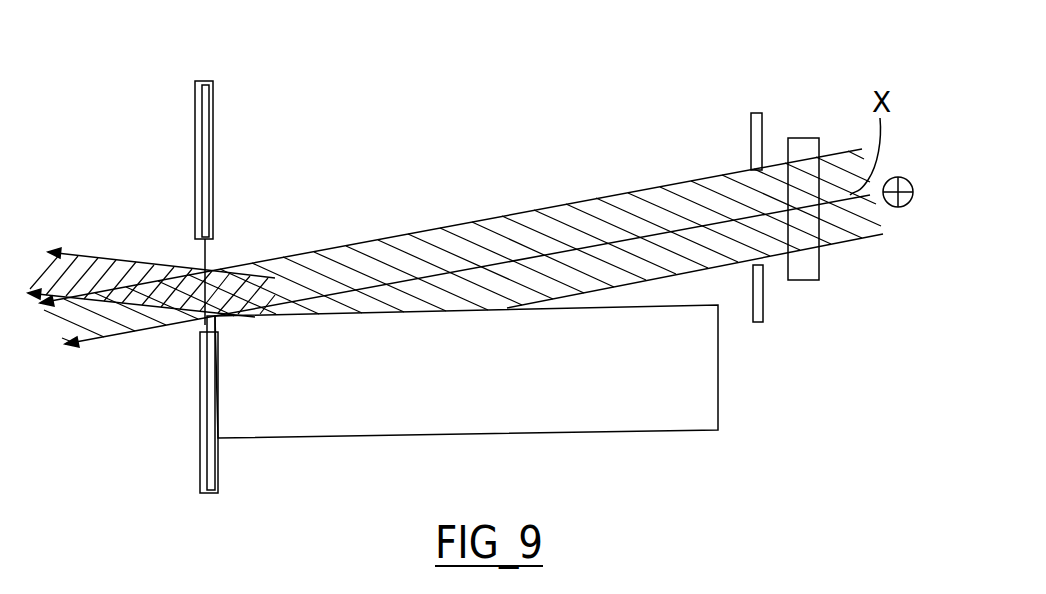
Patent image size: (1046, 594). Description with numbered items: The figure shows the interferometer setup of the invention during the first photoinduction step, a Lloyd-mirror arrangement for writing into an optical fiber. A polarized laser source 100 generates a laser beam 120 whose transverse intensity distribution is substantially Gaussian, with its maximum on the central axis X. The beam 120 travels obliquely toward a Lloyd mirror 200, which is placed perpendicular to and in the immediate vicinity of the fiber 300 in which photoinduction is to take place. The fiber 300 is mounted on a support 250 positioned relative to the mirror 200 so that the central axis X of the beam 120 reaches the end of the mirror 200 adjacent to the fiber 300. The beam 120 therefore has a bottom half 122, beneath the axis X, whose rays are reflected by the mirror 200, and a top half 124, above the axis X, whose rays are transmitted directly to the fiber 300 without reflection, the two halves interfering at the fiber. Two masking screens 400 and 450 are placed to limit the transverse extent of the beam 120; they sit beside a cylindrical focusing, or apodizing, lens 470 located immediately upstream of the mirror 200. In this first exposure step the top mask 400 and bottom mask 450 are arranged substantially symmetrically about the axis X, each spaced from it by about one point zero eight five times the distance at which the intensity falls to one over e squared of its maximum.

The polarized laser source 100 is at (903, 210).
The laser beam 120 is at (633, 207).
The bottom half of the beam 122 is at (640, 273).
The top half of the beam 124 is at (520, 230).
The Lloyd mirror 200 is at (497, 412).
The support 250 is at (196, 104).
The fiber 300 is at (202, 253).
The top masking screen 400 is at (751, 125).
The bottom masking screen 450 is at (752, 312).
The cylindrical focusing lens 470 is at (805, 150).